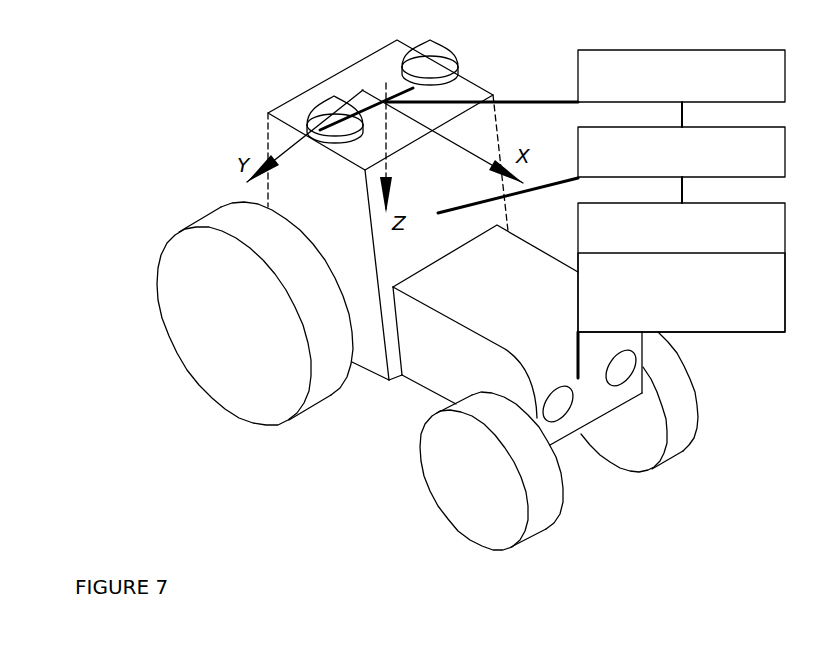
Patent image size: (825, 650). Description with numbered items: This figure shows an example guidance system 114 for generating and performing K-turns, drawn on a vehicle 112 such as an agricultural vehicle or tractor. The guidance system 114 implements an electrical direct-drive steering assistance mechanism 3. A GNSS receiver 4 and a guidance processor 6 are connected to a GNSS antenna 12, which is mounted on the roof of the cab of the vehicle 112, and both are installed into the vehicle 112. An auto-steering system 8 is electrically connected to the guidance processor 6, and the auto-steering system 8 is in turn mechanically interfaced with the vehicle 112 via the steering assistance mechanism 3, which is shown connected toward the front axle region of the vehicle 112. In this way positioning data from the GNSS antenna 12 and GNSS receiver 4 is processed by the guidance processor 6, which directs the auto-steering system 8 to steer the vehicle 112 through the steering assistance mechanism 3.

The guidance system 114 is at (243, 62).
The GNSS antenna 12 is at (418, 53).
The GNSS receiver 4 is at (681, 76).
The guidance processor 6 is at (681, 152).
The auto-steering system 8 is at (681, 267).
The steering assistance mechanism 3 is at (681, 315).
The vehicle 112 is at (485, 321).